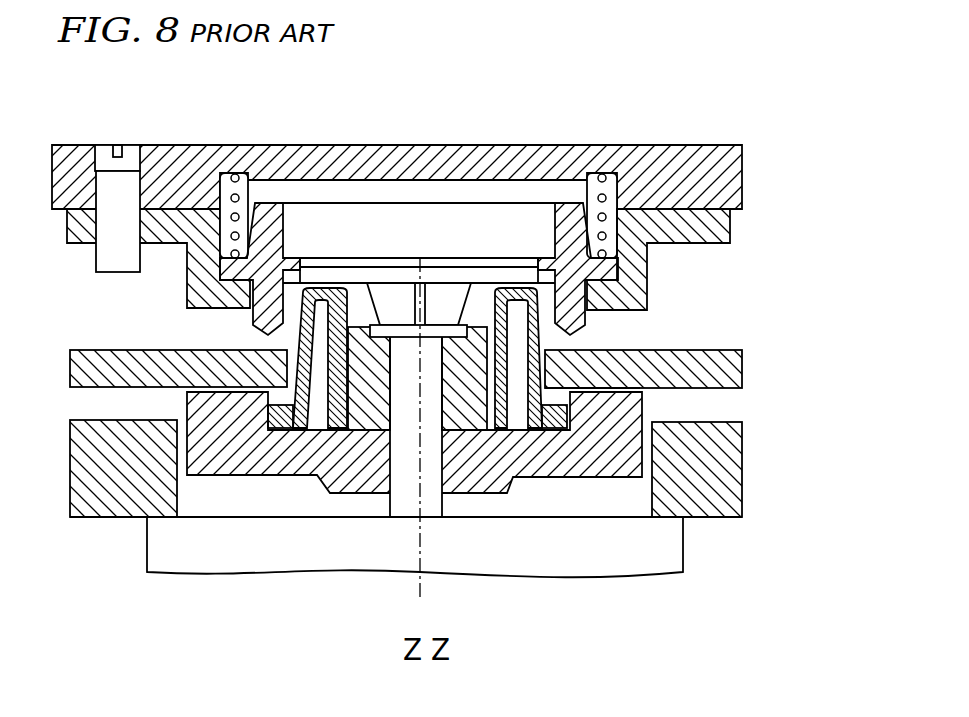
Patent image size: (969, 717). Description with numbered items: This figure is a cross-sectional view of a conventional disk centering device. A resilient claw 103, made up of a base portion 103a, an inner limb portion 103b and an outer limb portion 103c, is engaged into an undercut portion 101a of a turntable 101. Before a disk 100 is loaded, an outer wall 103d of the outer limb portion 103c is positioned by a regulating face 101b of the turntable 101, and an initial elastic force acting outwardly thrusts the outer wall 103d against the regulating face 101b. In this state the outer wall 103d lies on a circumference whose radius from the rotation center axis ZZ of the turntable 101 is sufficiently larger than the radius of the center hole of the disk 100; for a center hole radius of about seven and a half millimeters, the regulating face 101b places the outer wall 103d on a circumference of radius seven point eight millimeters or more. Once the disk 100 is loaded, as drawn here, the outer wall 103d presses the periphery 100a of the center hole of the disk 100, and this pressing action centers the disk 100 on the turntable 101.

The disk 100 is at (680, 358).
The periphery of the center hole 100a is at (548, 390).
The turntable 101 is at (248, 458).
The undercut portion 101a is at (548, 402).
The regulating face 101b is at (556, 400).
The resilient claw 103 is at (385, 300).
The base portion 103a is at (437, 337).
The inner limb portion 103b is at (497, 330).
The outer limb portion 103c is at (543, 357).
The outer wall 103d is at (643, 303).